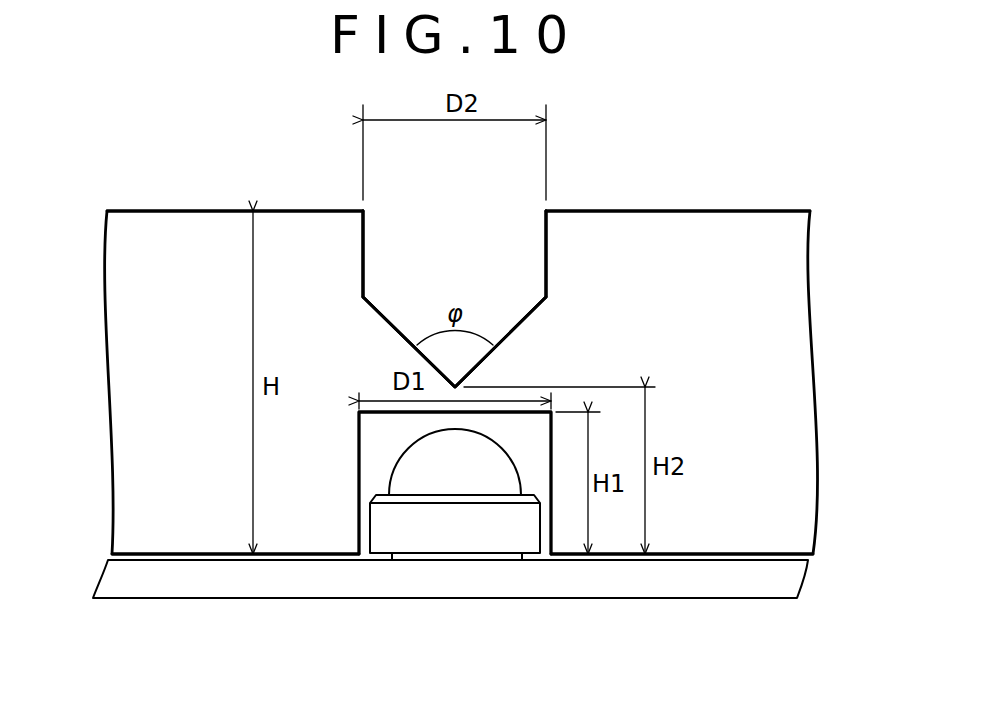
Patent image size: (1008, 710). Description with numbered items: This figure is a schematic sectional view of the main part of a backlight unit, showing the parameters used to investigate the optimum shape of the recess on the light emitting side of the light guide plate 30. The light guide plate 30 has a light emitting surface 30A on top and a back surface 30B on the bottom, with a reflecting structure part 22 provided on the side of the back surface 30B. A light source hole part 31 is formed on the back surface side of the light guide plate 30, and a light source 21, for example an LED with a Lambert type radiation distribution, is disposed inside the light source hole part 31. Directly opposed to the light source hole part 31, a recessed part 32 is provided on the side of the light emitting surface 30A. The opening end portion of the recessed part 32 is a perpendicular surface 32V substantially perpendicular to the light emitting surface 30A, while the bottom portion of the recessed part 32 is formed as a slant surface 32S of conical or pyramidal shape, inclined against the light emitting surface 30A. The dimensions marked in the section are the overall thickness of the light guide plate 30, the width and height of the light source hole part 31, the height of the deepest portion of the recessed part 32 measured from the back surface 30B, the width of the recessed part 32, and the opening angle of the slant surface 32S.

The light guide plate 30 is at (715, 242).
The light emitting surface 30A is at (164, 210).
The back surface 30B is at (170, 558).
The light source hole part 31 is at (369, 432).
The recessed part 32 is at (417, 283).
The slant surface 32S is at (507, 328).
The perpendicular surface 32V is at (544, 243).
The light source 21 is at (484, 477).
The reflecting structure part 22 is at (670, 570).